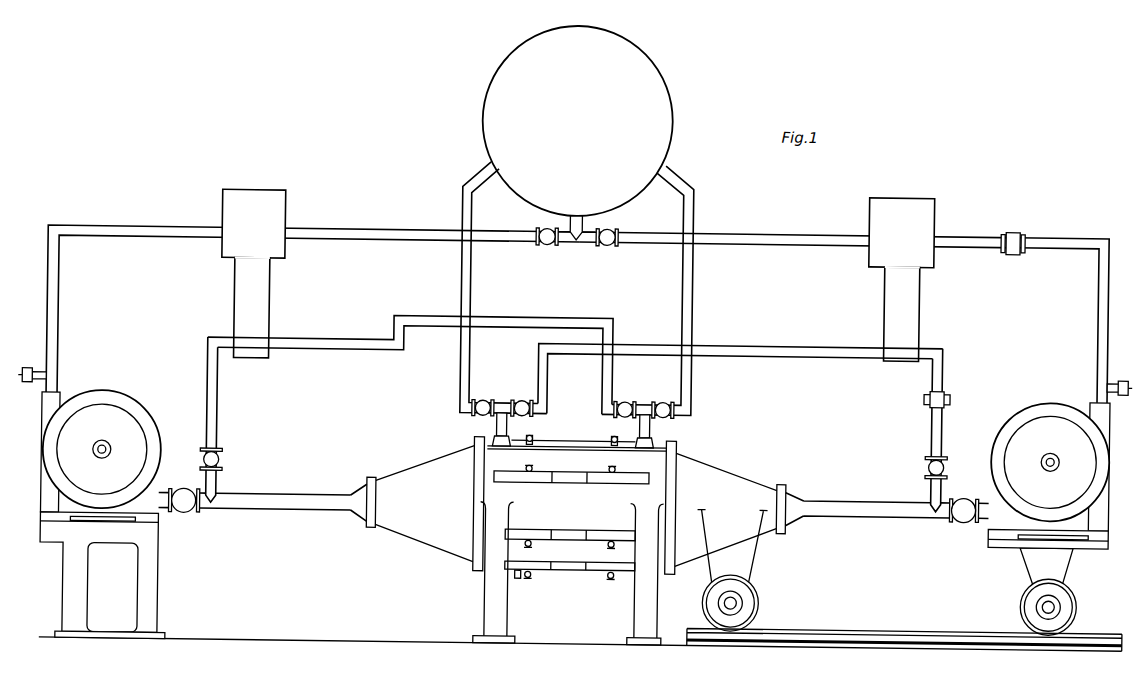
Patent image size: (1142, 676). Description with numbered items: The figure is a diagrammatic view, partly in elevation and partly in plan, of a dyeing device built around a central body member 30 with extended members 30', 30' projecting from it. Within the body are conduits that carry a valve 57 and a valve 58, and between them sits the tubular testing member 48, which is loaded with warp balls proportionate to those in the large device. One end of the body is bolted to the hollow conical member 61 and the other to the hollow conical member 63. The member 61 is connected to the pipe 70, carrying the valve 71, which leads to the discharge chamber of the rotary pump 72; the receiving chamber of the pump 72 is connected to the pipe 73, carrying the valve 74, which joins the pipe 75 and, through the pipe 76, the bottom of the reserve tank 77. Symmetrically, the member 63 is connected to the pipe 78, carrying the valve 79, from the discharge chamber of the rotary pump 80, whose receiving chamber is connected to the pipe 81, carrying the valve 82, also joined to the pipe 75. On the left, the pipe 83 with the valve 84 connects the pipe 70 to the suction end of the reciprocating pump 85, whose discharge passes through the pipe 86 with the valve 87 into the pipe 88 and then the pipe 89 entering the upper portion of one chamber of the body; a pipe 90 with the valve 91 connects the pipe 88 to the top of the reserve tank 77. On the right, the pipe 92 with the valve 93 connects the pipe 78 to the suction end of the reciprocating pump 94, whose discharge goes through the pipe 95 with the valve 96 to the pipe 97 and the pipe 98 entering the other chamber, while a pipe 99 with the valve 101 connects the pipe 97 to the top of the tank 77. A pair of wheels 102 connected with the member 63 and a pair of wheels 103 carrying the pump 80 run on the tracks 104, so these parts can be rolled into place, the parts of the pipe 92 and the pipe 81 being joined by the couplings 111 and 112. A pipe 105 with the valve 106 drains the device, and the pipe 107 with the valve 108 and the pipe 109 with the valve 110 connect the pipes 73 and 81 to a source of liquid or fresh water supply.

The pipe 78 is at (858, 498).
The body member 30 is at (569, 577).
The extended members 30' is at (571, 497).
The tubular testing member 48 is at (574, 504).
The valve 57 is at (533, 436).
The valve 58 is at (613, 438).
The hollow conical member 61 is at (420, 502).
The hollow conical member 63 is at (738, 475).
The pipe 70 is at (268, 497).
The valve 71 is at (188, 516).
The rotary pump 72 is at (124, 431).
The pipe 73 is at (158, 243).
The valve 74 is at (543, 246).
The pipe 75 is at (588, 245).
The pipe 76 is at (584, 224).
The reserve tank 77 is at (577, 121).
The valve 79 is at (963, 519).
The rotary pump 80 is at (1028, 426).
The pipe 81 is at (1100, 293).
The valve 82 is at (606, 247).
The pipe 83 is at (219, 416).
The valve 84 is at (222, 463).
The reciprocating pump 85 is at (258, 296).
The pipe 86 is at (438, 320).
The valve 87 is at (627, 397).
The pipe 88 is at (630, 406).
The pipe 89 is at (653, 428).
The pipe 90 is at (693, 283).
The valve 91 is at (668, 400).
The pipe 92 is at (943, 432).
The valve 93 is at (946, 463).
The reciprocating pump 94 is at (891, 302).
The pipe 95 is at (740, 345).
The valve 96 is at (522, 400).
The pipe 97 is at (502, 404).
The pipe 98 is at (497, 426).
The pipe 99 is at (460, 264).
The valve 101 is at (482, 399).
The wheels 102 is at (748, 600).
The wheels 103 is at (1033, 603).
The tracks 104 is at (893, 628).
The pipe 105 is at (520, 580).
The valve 106 is at (529, 580).
The pipe 107 is at (40, 378).
The valve 108 is at (27, 376).
The pipe 109 is at (1106, 390).
The valve 110 is at (1121, 373).
The coupling 111 is at (923, 398).
The coupling 112 is at (1011, 227).